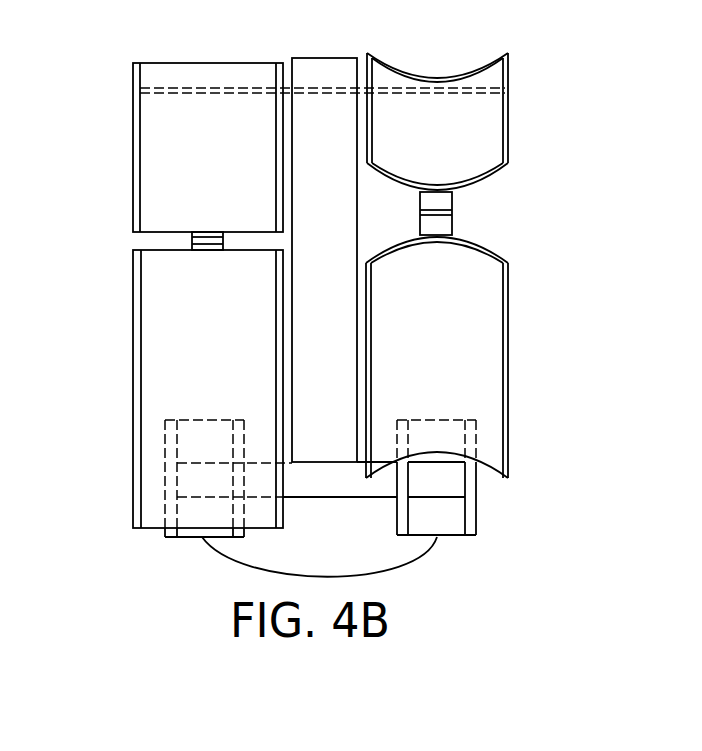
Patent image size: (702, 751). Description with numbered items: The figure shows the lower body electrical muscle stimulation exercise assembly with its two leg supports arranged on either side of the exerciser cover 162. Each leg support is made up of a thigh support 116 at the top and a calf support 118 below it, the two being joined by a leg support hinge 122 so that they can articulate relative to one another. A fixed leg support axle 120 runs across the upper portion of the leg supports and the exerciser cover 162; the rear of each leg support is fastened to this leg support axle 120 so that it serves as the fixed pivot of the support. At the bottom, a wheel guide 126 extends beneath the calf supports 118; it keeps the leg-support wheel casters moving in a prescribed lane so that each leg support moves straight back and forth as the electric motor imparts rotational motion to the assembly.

The thigh support 116 is at (167, 153).
The calf support 118 is at (155, 373).
The fixed leg support axle 120 is at (202, 88).
The leg support hinge 122 is at (192, 242).
The wheel guide 126 is at (402, 565).
The exerciser cover 162 is at (320, 68).